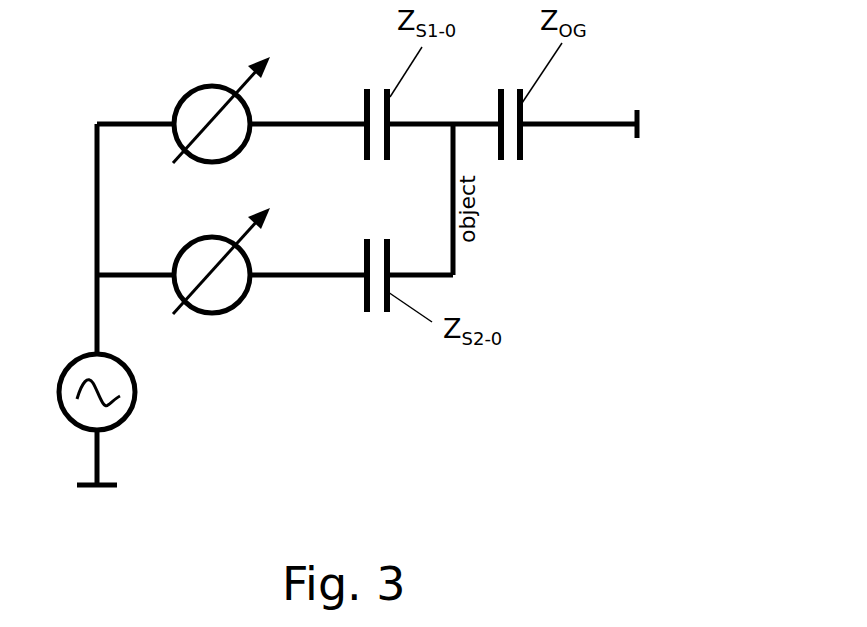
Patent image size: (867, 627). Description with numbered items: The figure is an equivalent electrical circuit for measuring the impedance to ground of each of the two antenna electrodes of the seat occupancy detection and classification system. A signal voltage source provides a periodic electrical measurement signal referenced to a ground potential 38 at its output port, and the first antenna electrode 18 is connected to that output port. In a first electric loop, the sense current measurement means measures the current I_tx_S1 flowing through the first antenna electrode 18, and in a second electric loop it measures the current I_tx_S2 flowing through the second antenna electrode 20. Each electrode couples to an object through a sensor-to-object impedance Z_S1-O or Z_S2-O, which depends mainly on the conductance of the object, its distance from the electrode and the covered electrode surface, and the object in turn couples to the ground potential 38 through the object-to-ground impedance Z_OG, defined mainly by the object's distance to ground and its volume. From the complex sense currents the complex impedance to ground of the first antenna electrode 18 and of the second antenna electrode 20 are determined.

The first antenna electrode 18 is at (145, 120).
The second antenna electrode 20 is at (143, 272).
The ground potential 38 is at (83, 490).